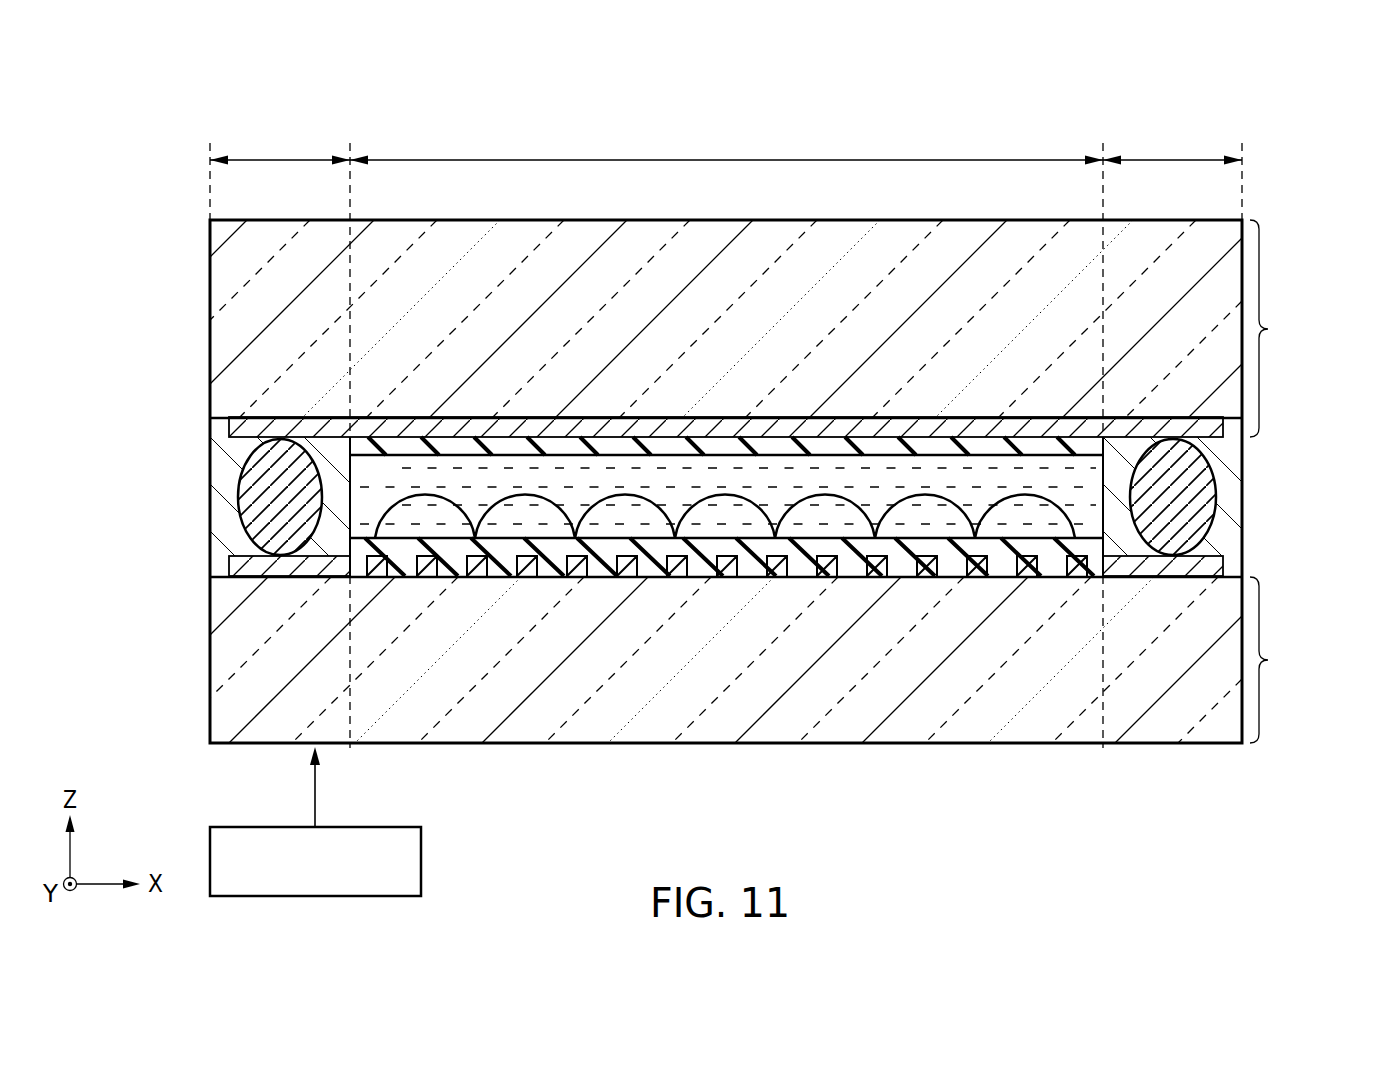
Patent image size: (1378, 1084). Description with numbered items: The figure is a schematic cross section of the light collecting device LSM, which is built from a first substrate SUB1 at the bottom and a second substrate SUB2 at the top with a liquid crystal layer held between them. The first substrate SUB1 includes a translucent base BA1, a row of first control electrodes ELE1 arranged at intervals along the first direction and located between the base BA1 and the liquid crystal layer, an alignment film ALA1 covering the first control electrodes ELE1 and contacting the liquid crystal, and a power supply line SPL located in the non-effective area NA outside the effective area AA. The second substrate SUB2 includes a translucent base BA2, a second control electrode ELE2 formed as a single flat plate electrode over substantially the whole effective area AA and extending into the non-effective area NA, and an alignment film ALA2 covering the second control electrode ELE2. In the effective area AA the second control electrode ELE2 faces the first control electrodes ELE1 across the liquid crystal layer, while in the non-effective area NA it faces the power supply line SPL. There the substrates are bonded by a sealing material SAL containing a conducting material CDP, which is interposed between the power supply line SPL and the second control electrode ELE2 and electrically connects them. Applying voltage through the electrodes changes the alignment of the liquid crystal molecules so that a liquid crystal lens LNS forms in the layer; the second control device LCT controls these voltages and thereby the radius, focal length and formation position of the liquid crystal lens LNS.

The light collecting device LSM is at (897, 112).
The non-effective area NA is at (726, 438).
The effective area AA is at (726, 147).
The second substrate SUB2 is at (772, 328).
The first substrate SUB1 is at (772, 660).
The base BA2 is at (215, 300).
The base BA1 is at (218, 654).
The second control electrode ELE2 is at (232, 426).
The first control electrodes ELE1 is at (480, 566).
The alignment film ALA2 is at (1030, 448).
The alignment film ALA1 is at (1048, 566).
The sealing material SAL is at (216, 476).
The conducting material CDP is at (243, 505).
The power supply line SPL is at (237, 563).
The liquid crystal lens LNS is at (437, 494).
The second control device LCT is at (421, 865).